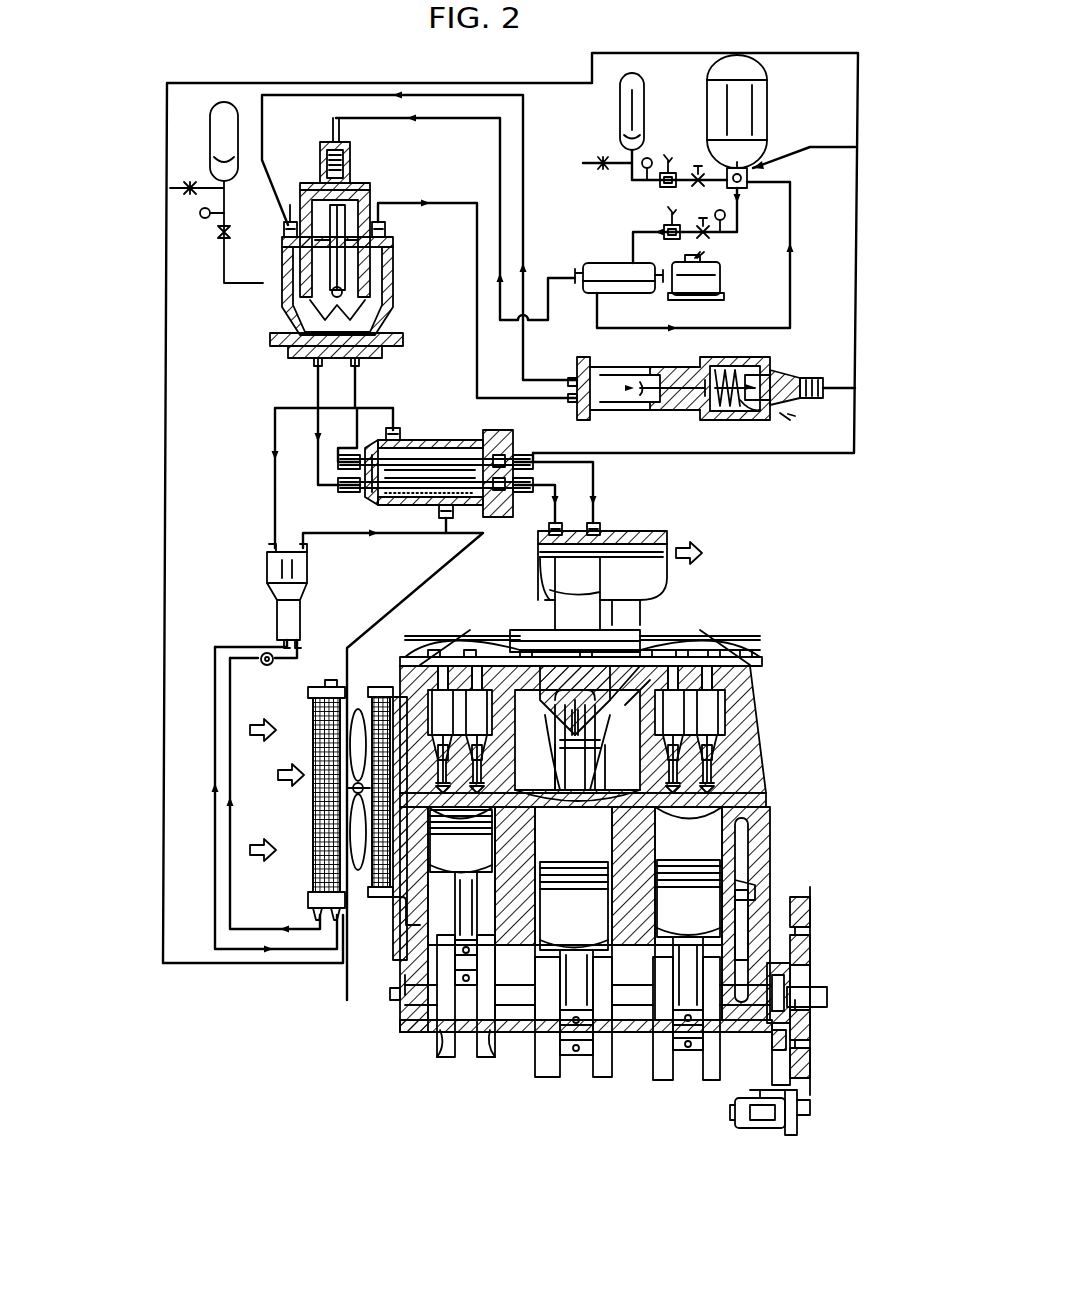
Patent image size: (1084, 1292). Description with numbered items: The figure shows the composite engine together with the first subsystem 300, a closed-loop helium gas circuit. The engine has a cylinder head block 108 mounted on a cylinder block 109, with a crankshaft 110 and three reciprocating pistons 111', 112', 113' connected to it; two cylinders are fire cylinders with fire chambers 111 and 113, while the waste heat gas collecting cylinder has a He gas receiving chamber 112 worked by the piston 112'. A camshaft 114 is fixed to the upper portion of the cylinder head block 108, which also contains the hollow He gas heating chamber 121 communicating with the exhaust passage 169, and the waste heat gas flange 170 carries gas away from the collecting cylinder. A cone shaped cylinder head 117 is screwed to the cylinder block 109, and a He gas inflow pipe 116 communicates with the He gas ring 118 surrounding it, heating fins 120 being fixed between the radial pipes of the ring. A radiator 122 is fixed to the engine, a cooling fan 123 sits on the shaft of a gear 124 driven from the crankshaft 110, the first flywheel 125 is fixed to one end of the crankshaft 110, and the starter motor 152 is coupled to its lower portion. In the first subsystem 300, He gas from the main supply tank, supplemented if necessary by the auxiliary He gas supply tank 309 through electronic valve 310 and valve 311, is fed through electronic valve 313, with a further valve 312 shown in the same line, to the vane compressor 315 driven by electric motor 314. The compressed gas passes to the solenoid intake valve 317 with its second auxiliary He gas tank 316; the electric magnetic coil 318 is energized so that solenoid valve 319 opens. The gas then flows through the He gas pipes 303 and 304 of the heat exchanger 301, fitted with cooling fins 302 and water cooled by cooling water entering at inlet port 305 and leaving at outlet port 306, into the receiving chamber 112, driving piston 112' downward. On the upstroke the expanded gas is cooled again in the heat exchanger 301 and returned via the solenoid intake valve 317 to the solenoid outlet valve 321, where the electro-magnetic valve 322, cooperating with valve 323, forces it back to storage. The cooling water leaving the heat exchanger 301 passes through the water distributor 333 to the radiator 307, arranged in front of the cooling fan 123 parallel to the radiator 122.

The cylinder head block 108 is at (760, 725).
The cylinder block 109 is at (758, 850).
The crankshaft 110 is at (590, 1055).
The fire chamber 111 is at (530, 903).
The reciprocating piston 111' is at (385, 999).
The He gas receiving chamber 112 is at (579, 977).
The reciprocating piston 112' is at (544, 1019).
The fire chamber 113 is at (727, 976).
The reciprocating piston 113' is at (740, 983).
The camshaft 114 is at (470, 650).
The He gas inflow pipe 116 is at (593, 522).
The cone shaped cylinder head 117 is at (735, 765).
The He gas ring 118 is at (745, 805).
The heating fin 120 is at (660, 650).
The He gas heating chamber 121 is at (590, 790).
The radiator 122 is at (382, 905).
The cooling fan 123 is at (312, 895).
The gear 124 is at (355, 840).
The first flywheel 125 is at (810, 1095).
The starter motor 152 is at (735, 1115).
The exhaust passage 169 is at (515, 640).
The waste heat gas flange 170 is at (632, 540).
The first subsystem 300 is at (812, 455).
The heat exchanger 301 is at (447, 435).
The cooling fin 302 is at (455, 440).
The He gas pipe 303 is at (505, 448).
The He gas pipe 304 is at (385, 503).
The inlet port 305 is at (441, 520).
The outlet port 306 is at (400, 432).
The radiator 307 is at (318, 768).
The auxiliary He gas supply tank 309 is at (645, 117).
The electronic valve 310 is at (668, 160).
The valve 311 is at (698, 188).
The valve 312 is at (710, 238).
The electronic valve 313 is at (668, 224).
The electric motor 314 is at (715, 290).
The vane compressor 315 is at (618, 268).
The second auxiliary He gas tank 316 is at (213, 131).
The solenoid intake valve 317 is at (363, 182).
The electric magnetic coil 318 is at (372, 195).
The solenoid valve 319 is at (345, 303).
The solenoid outlet valve 321 is at (778, 362).
The electro-magnetic valve 322 is at (755, 415).
The valve 323 is at (640, 410).
The water distributor 333 is at (307, 588).